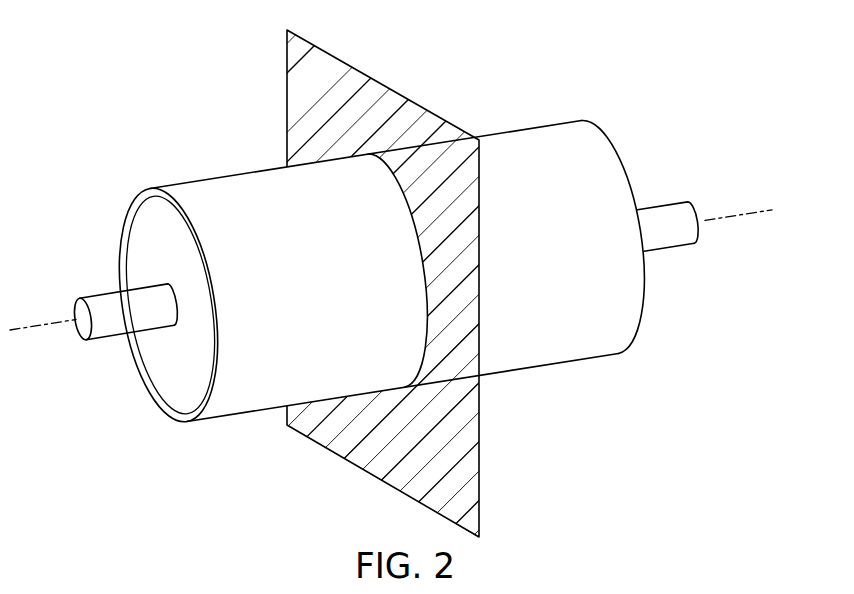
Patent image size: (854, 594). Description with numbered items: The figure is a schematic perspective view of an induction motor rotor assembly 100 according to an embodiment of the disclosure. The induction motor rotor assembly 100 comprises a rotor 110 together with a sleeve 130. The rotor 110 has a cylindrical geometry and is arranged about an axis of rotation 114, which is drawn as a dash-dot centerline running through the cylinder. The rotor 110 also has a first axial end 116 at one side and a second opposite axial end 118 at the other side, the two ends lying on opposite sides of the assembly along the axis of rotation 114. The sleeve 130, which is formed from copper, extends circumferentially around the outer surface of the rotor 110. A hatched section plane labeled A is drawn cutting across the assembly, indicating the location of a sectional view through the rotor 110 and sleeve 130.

The induction motor rotor assembly 100 is at (118, 123).
The rotor 110 is at (177, 368).
The axis of rotation 114 is at (745, 211).
The first axial end 116 is at (185, 398).
The second opposite axial end 118 is at (644, 307).
The sleeve 130 is at (560, 123).
The section plane A is at (340, 60).